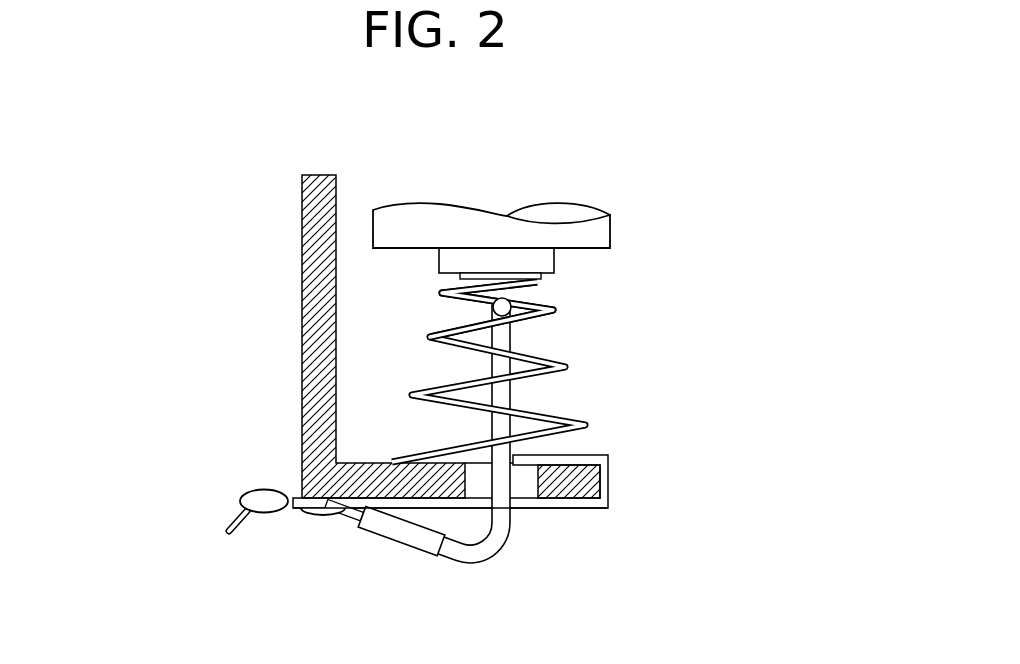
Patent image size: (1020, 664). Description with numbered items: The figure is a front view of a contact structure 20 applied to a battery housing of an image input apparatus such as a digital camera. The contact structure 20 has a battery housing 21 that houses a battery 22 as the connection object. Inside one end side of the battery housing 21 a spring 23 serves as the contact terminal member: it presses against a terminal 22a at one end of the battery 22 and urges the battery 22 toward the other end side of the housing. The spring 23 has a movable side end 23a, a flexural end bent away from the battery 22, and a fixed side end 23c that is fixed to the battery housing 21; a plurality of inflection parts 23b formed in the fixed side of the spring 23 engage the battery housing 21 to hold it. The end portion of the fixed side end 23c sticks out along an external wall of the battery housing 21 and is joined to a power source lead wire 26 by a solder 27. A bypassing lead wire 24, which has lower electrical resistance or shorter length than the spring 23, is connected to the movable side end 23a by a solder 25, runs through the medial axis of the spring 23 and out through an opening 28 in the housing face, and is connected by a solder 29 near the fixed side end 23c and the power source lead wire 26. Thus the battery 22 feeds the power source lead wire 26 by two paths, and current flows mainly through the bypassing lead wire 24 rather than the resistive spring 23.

The contact structure 20 is at (690, 177).
The battery housing 21 is at (302, 327).
The battery 22 is at (610, 232).
The terminal 22a is at (554, 262).
The spring 23 is at (512, 358).
The movable side end 23a is at (511, 303).
The inflection parts 23b is at (608, 455).
The fixed side end 23c is at (438, 540).
The bypassing lead wire 24 is at (517, 393).
The solder 25 is at (477, 316).
The power source lead wire 26 is at (236, 517).
The solder 27 is at (263, 490).
The opening 28 is at (588, 490).
The solder 29 is at (320, 514).